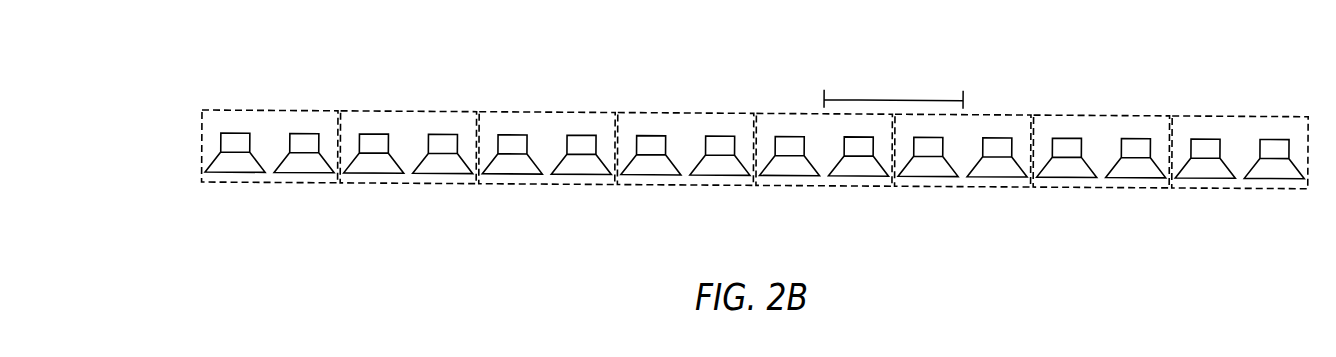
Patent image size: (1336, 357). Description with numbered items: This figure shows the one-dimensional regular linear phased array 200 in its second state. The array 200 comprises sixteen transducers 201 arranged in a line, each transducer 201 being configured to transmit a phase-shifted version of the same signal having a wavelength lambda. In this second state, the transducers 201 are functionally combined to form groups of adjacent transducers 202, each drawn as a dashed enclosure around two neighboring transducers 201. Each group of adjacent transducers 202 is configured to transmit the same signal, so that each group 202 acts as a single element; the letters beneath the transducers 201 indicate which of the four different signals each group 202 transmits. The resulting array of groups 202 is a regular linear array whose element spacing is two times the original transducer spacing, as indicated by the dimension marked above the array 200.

The array 200 is at (163, 116).
The transducer 201 is at (237, 132).
The group of adjacent transducers 202 is at (283, 110).